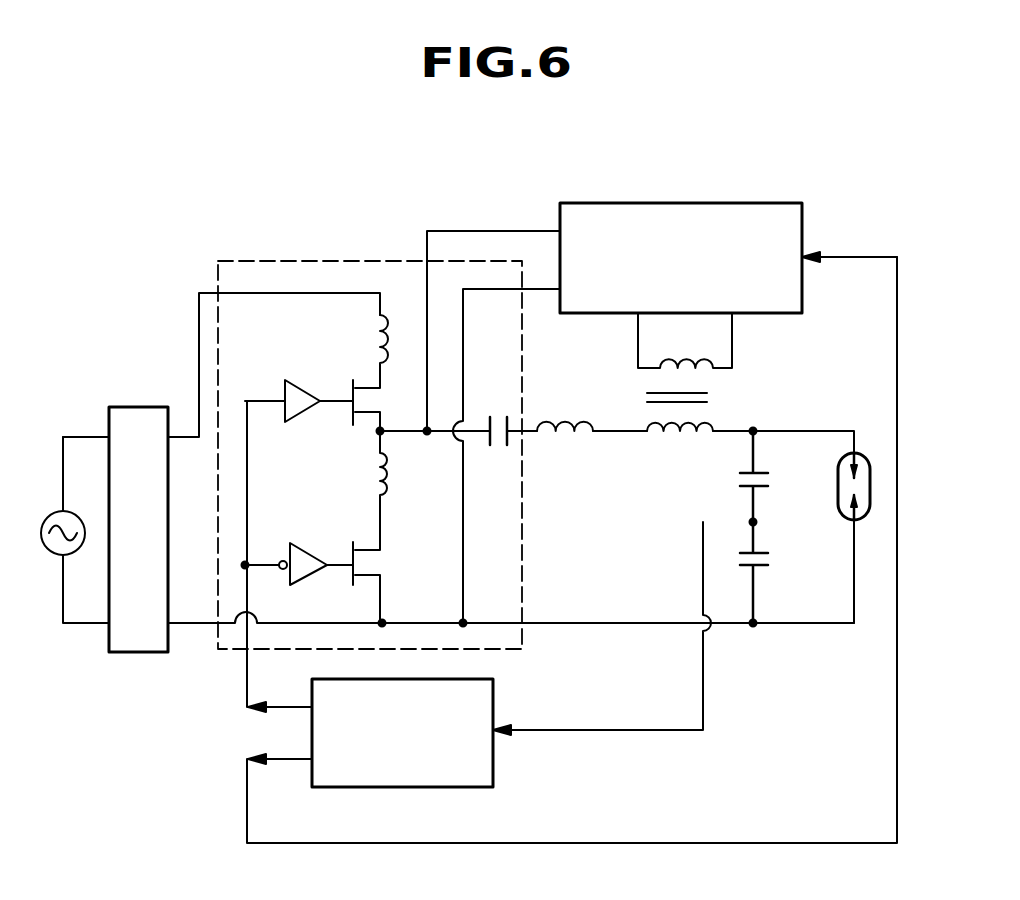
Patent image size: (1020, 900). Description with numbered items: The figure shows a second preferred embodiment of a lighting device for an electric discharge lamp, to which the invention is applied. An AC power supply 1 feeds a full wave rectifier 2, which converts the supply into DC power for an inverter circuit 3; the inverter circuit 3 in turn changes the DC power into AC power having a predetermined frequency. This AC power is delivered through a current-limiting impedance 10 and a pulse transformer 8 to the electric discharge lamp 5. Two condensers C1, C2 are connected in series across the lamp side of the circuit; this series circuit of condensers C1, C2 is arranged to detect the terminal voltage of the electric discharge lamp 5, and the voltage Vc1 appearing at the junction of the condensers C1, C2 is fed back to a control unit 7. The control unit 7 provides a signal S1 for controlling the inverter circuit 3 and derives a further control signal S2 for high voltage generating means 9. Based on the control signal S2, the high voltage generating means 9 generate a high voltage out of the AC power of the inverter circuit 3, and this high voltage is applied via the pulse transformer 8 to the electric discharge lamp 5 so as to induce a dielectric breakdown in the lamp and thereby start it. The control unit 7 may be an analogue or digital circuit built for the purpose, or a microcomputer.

The AC power supply 1 is at (73, 514).
The full wave rectifier 2 is at (138, 406).
The inverter circuit 3 is at (308, 262).
The electric discharge lamp 5 is at (838, 482).
The control unit 7 is at (494, 756).
The pulse transformer 8 is at (718, 398).
The high voltage generating means 9 is at (758, 203).
The current-limiting impedance 10 is at (562, 418).
The condenser C1 is at (767, 481).
The condenser C2 is at (768, 557).
The voltage at junction of condensers Vc1 is at (755, 522).
The control signal S1 is at (247, 677).
The control signal S2 is at (247, 778).